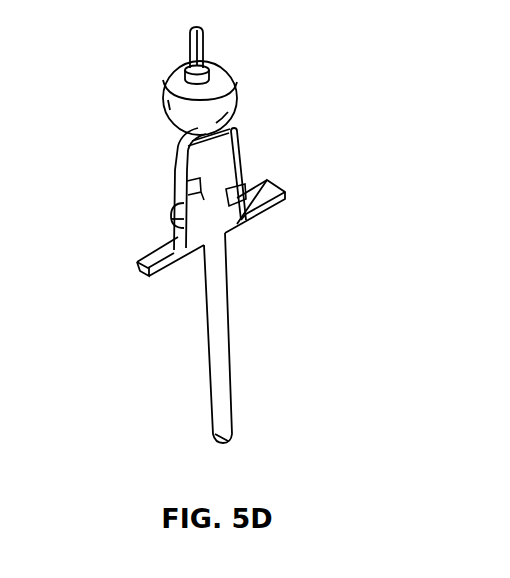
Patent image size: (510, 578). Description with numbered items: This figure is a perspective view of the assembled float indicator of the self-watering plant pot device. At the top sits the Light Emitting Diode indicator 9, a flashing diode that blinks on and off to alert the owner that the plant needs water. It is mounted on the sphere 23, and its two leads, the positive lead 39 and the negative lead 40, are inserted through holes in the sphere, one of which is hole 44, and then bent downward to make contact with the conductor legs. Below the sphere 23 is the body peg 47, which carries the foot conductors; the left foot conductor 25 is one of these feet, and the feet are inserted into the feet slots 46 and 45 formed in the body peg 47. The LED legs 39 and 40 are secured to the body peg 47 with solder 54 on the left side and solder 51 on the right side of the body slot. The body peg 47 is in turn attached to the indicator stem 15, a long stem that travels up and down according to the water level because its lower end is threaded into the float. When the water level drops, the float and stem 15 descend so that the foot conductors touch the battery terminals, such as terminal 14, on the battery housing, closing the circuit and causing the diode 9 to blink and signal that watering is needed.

The Light Emitting Diode indicator 9 is at (203, 32).
The sphere 23 is at (243, 97).
The hole 44 is at (177, 127).
The positive lead 39 is at (173, 170).
The negative lead 40 is at (240, 146).
The feet slot 46 is at (228, 172).
The feet slot 45 is at (227, 199).
The body peg 47 is at (240, 172).
The solder 54 is at (170, 217).
The left foot conductor 25 is at (153, 282).
The battery terminal 14 is at (270, 200).
The solder 51 is at (247, 200).
The indicator stem 15 is at (210, 367).